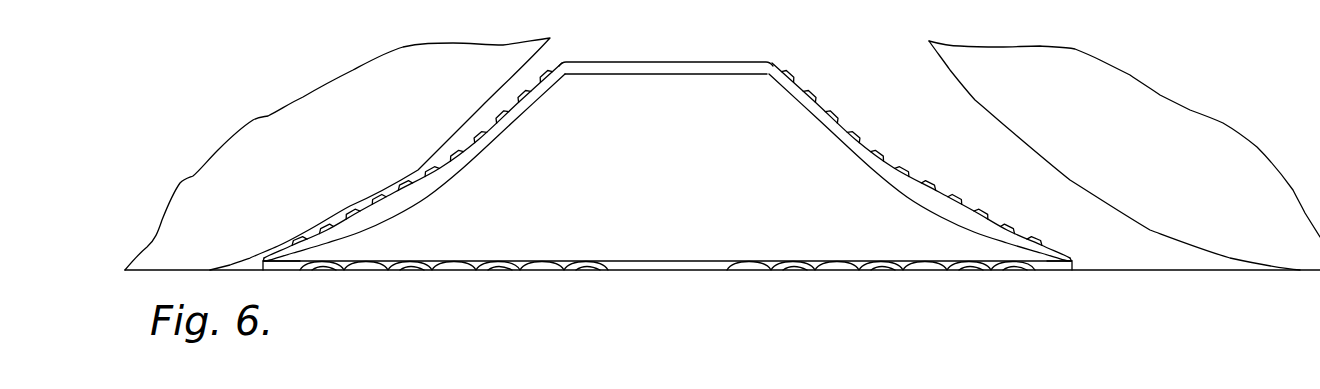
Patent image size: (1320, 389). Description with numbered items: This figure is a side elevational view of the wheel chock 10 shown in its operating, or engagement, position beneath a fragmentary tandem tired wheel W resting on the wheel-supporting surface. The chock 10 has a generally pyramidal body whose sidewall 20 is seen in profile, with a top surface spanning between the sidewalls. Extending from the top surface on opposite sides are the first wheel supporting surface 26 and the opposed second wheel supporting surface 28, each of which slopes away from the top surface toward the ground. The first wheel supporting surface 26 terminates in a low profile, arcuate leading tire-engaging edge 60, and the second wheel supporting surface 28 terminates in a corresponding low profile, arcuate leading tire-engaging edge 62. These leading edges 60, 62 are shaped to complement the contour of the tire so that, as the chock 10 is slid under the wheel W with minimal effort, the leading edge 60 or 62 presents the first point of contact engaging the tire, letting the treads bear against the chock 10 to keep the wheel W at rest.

The wheel chock 10 is at (792, 42).
The sidewall 20 is at (682, 92).
The first wheel supporting surface 26 is at (490, 132).
The second wheel supporting surface 28 is at (887, 170).
The first leading tire-engaging edge 60 is at (262, 263).
The second leading tire-engaging edge 62 is at (1073, 268).
The wheel W is at (313, 120).